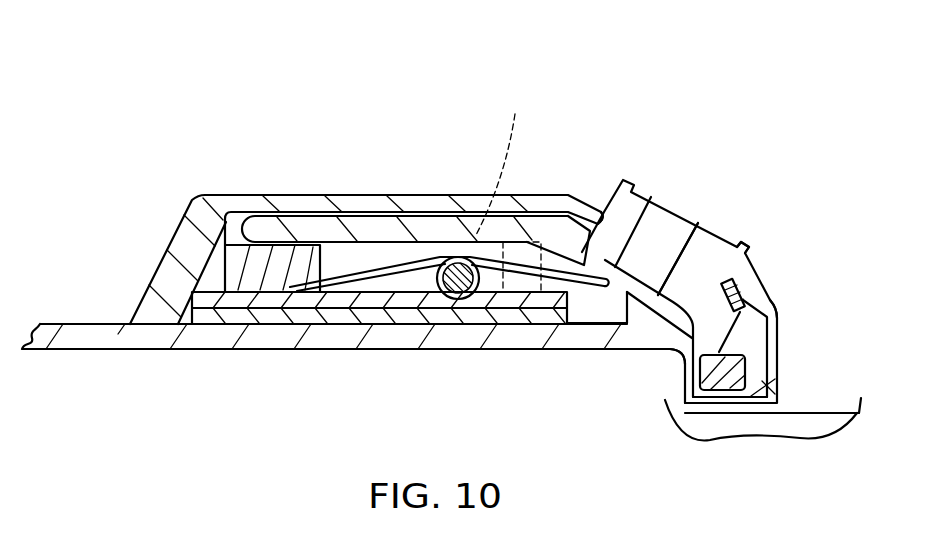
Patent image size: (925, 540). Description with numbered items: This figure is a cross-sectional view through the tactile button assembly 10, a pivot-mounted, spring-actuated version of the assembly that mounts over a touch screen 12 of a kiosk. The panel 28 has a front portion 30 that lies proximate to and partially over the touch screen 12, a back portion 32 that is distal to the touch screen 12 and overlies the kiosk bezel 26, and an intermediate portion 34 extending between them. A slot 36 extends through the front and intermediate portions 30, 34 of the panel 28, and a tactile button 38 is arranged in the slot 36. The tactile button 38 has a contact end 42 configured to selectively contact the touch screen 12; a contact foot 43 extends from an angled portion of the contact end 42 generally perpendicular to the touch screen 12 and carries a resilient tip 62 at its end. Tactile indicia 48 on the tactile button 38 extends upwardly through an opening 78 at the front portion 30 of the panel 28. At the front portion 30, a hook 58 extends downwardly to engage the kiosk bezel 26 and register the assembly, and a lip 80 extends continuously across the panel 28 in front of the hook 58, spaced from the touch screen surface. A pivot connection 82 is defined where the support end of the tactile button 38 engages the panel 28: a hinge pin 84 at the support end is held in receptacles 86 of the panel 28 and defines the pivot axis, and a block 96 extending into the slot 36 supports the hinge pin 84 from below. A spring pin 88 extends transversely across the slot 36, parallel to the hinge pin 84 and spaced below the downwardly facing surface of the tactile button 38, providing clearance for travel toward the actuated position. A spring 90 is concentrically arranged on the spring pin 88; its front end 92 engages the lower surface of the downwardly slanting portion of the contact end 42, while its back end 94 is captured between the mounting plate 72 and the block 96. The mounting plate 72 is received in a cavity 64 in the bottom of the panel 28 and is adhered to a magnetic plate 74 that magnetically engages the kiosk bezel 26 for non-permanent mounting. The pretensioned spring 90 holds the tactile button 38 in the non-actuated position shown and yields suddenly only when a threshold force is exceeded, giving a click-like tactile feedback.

The tactile button assembly 10 is at (462, 78).
The touch screen 12 is at (748, 425).
The kiosk bezel 26 is at (82, 343).
The panel 28 is at (448, 192).
The front portion 30 is at (787, 310).
The back portion 32 is at (143, 290).
The intermediate portion 34 is at (375, 191).
The slot 36 is at (508, 187).
The tactile button 38 is at (699, 221).
The contact end 42 is at (744, 290).
The contact foot 43 is at (706, 341).
The tactile indicia 48 is at (640, 210).
The hook 58 is at (754, 390).
The resilient tip 62 is at (717, 381).
The cavity 64 is at (598, 312).
The mounting plate 72 is at (510, 298).
The magnetic plate 74 is at (480, 317).
The opening 78 is at (603, 212).
The lip 80 is at (760, 397).
The pivot connection 82 is at (285, 195).
The hinge pin 84 is at (257, 230).
The receptacle 86 is at (236, 241).
The spring pin 88 is at (462, 300).
The spring 90 is at (426, 282).
The front end 92 is at (600, 276).
The back end 94 is at (333, 293).
The block 96 is at (233, 263).